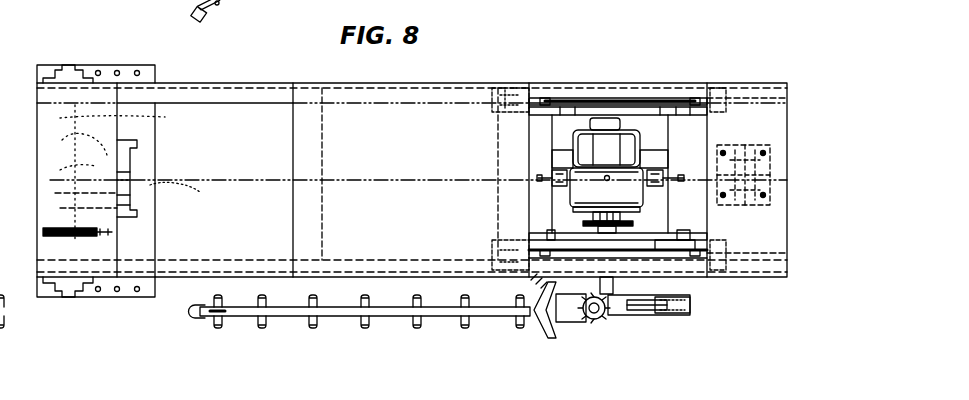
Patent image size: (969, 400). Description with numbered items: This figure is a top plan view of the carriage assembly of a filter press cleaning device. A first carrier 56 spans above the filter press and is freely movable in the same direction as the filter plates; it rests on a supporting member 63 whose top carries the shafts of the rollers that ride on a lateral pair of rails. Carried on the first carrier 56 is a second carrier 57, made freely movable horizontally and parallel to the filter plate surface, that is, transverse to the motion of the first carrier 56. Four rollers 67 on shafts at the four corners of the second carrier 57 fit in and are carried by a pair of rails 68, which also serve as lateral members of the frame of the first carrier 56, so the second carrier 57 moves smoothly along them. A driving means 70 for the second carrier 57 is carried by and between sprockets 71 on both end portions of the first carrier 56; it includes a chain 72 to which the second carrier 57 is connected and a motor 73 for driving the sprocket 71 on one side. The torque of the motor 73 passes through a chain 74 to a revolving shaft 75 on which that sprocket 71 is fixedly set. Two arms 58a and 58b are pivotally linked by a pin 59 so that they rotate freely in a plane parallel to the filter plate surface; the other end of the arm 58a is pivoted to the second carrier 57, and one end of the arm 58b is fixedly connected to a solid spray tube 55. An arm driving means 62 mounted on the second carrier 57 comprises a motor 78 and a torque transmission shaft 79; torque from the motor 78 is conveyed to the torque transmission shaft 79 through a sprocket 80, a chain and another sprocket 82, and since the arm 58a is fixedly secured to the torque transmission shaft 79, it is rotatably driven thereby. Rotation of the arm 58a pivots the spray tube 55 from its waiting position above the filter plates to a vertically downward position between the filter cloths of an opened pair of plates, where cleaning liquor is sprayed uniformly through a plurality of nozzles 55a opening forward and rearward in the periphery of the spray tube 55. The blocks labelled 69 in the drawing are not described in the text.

The spray tube 55 is at (344, 319).
The nozzles 55a is at (264, 329).
The first carrier 56 is at (204, 79).
The second carrier 57 is at (598, 100).
The arm 58a is at (628, 312).
The arm 58b is at (664, 316).
The pin 59 is at (680, 292).
The arm driving means 62 is at (645, 126).
The supporting member 63 is at (293, 131).
The rollers 67 is at (563, 96).
The rails 68 is at (228, 90).
The mounting blocks 69 is at (493, 268).
The driving means 70 is at (272, 221).
The sprockets 71 is at (175, 190).
The chain 72 is at (248, 188).
The motor 73 is at (138, 214).
The chain 74 is at (104, 236).
The revolving shaft 75 is at (129, 172).
The motor 78 is at (578, 188).
The torque transmission shaft 79 is at (692, 240).
The sprocket 80 is at (588, 224).
The sprocket 82 is at (632, 224).